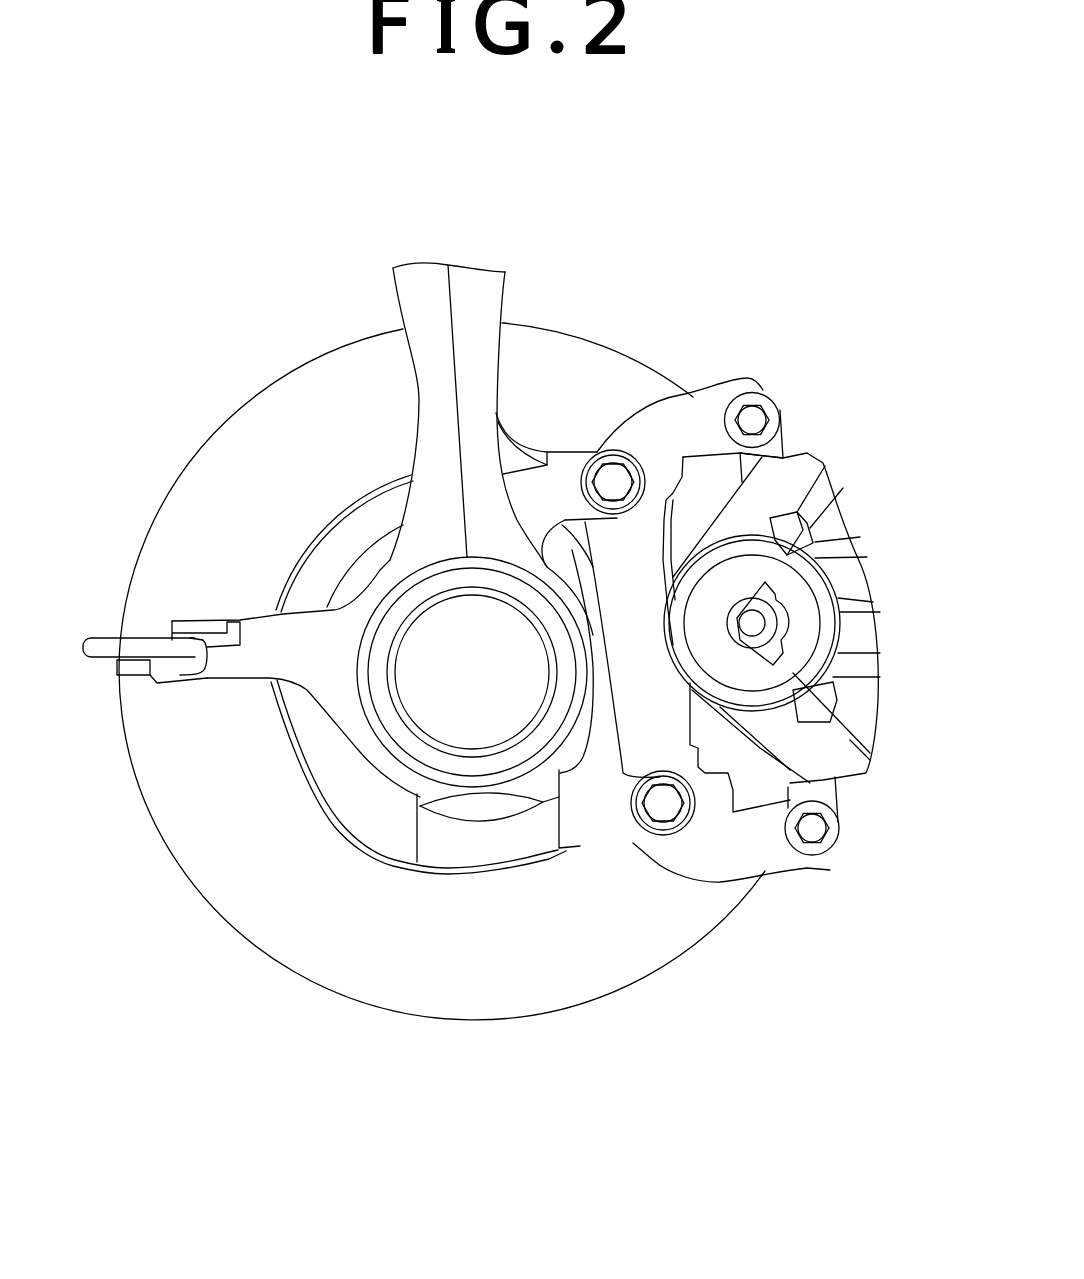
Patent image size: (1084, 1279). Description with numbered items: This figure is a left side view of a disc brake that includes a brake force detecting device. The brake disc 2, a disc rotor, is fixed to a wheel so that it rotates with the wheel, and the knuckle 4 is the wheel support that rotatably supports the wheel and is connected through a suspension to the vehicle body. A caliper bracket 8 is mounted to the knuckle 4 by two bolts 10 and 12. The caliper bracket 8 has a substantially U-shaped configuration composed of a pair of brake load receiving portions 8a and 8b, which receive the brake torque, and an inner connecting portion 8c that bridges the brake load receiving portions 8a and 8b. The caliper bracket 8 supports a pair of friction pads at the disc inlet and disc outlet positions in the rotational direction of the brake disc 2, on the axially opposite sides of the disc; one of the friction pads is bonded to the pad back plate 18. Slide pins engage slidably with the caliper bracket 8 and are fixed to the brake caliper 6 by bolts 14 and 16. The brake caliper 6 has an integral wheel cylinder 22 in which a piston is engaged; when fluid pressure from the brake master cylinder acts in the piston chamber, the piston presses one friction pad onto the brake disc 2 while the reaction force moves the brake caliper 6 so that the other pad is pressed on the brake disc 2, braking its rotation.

The brake disc 2 is at (437, 1005).
The knuckle 4 is at (272, 655).
The brake caliper 6 is at (831, 516).
The caliper bracket 8 is at (645, 412).
The brake load receiving portion 8a is at (697, 398).
The brake load receiving portion 8b is at (733, 867).
The inner connecting portion 8c is at (617, 658).
The bolt 10 is at (607, 468).
The bolt 12 is at (663, 833).
The bolt 14 is at (753, 412).
The bolt 16 is at (812, 847).
The pad back plate 18 is at (755, 772).
The wheel cylinder 22 is at (805, 607).